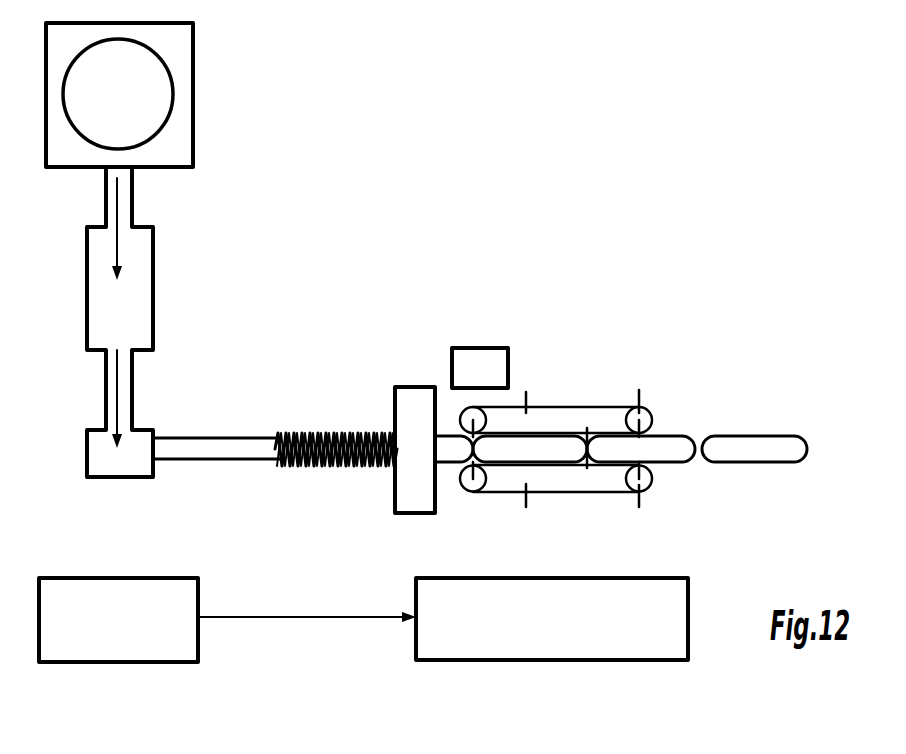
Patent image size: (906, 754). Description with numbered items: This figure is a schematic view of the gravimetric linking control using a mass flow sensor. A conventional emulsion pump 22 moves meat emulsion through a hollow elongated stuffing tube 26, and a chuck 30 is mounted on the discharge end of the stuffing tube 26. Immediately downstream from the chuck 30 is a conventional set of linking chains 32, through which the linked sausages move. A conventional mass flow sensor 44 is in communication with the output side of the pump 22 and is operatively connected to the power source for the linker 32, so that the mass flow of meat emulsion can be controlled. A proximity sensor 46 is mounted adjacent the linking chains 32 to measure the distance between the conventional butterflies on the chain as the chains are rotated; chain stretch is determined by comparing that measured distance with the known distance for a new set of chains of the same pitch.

The emulsion pump 22 is at (178, 42).
The mass flow sensor 44 is at (90, 245).
The stuffing tube 26 is at (212, 459).
The chuck 30 is at (417, 500).
The linking chains 32 is at (503, 492).
The proximity sensor 46 is at (497, 358).